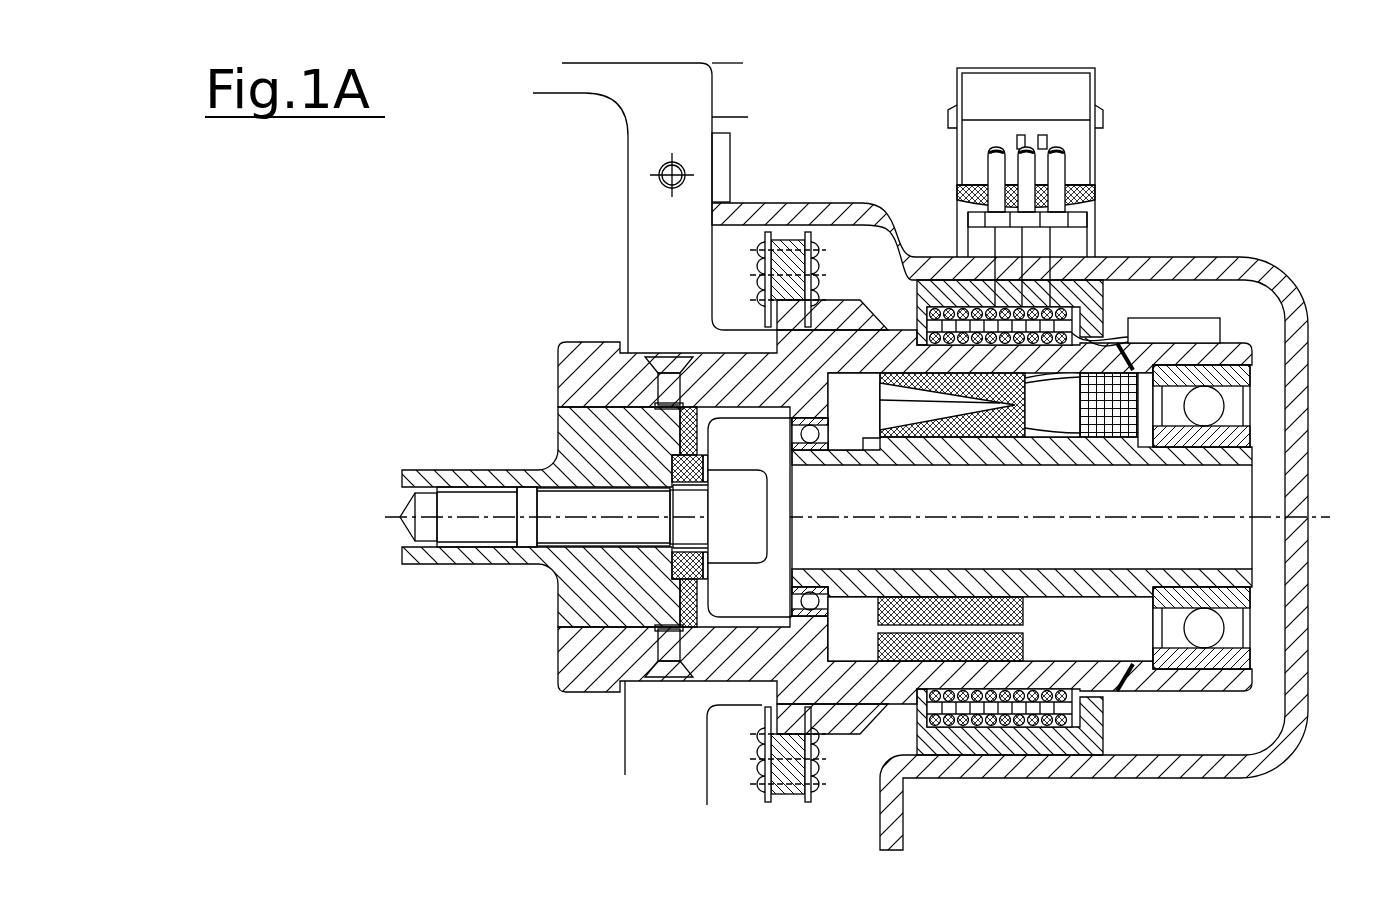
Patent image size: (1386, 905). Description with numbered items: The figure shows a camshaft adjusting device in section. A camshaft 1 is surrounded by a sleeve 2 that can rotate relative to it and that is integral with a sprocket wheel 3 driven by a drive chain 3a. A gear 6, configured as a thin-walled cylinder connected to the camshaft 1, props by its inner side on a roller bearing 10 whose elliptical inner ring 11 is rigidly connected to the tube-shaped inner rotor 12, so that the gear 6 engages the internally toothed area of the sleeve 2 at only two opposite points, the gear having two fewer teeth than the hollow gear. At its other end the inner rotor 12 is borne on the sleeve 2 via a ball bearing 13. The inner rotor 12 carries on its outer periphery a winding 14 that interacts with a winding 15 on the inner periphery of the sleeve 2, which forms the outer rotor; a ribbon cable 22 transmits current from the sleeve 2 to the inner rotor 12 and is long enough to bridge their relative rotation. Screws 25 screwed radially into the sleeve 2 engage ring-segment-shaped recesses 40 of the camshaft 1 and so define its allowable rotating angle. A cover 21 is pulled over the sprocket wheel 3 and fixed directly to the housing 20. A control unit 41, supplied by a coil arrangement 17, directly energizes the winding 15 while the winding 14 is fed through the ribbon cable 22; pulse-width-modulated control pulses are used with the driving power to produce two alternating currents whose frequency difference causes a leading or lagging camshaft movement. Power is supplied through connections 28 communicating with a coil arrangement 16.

The camshaft 1 is at (567, 437).
The sleeve 2 is at (862, 347).
The sprocket wheel 3 is at (790, 272).
The drive chain 3a is at (766, 803).
The gear 6 is at (748, 616).
The roller bearing 10 is at (811, 600).
The inner ring 11 is at (797, 450).
The inner rotor 12 is at (1078, 590).
The ball bearing 13 is at (1250, 657).
The winding 14 is at (977, 437).
The winding 15 is at (890, 437).
The coil arrangement 16 is at (1090, 262).
The coil arrangement 17 is at (1068, 338).
The housing 20 is at (680, 97).
The cover 21 is at (1297, 357).
The ribbon cable 22 is at (1107, 440).
The screws 25 is at (663, 640).
The connections 28 is at (1062, 162).
The ring segment shaped recesses 40 is at (677, 590).
The control unit 41 is at (1200, 332).